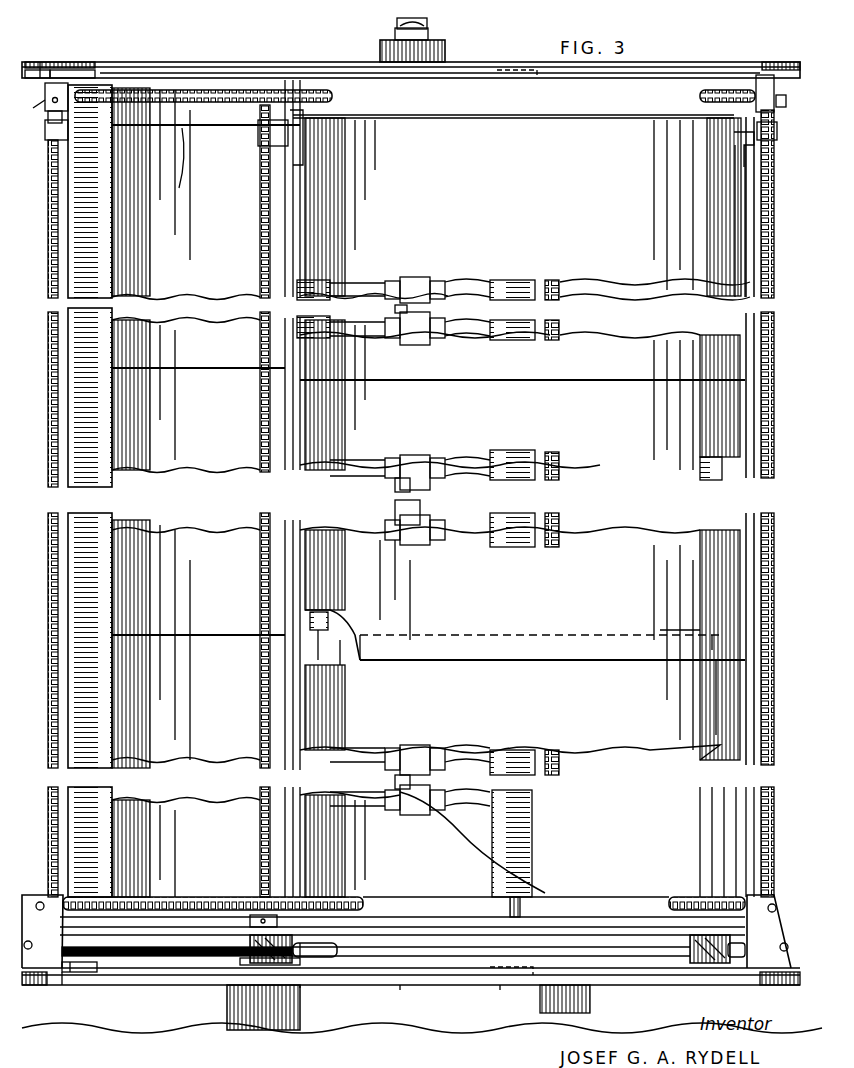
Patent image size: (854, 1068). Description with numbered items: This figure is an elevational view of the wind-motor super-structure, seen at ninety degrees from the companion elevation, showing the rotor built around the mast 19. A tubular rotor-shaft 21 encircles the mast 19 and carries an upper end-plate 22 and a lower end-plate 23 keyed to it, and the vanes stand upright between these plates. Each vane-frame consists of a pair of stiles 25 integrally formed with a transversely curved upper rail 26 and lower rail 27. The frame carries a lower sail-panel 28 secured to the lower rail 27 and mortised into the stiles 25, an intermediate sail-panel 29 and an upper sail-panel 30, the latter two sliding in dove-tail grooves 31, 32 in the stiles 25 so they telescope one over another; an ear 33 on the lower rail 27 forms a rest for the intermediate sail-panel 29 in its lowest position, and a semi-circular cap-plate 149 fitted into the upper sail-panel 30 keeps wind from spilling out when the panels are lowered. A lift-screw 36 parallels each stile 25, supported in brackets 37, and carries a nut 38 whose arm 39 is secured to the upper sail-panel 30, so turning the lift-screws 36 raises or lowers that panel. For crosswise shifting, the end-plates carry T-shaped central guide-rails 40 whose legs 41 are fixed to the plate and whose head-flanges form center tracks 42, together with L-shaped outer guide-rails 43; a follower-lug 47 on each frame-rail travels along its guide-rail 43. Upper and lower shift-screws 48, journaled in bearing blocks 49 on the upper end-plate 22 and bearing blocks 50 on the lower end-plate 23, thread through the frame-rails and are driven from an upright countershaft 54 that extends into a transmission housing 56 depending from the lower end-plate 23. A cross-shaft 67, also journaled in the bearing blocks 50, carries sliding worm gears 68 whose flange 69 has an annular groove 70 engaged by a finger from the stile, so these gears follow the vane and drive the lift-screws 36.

The mast 19 is at (416, 36).
The tubular rotor-shaft 21 is at (422, 462).
The upper end-plate 22 is at (350, 62).
The lower end-plate 23 is at (397, 980).
The stiles 25 is at (332, 282).
The upper rail 26 is at (607, 103).
The lower rail 27 is at (165, 880).
The lower sail-panel 28 is at (558, 668).
The intermediate sail-panel 29 is at (578, 395).
The upper sail-panel 30 is at (642, 270).
The groove 31 is at (310, 700).
The groove 32 is at (295, 730).
The ear 33 is at (522, 907).
The lift-screw 36 is at (48, 258).
The brackets 37 is at (250, 925).
The nut 38 is at (47, 135).
The arm 39 is at (258, 148).
The central guide-rails 40 is at (22, 62).
The legs 41 is at (40, 68).
The center tracks 42 is at (58, 72).
The guide-rails 43 is at (196, 77).
The follower-lug 47 is at (519, 70).
The shift-screws 48 is at (240, 90).
The bearing blocks 49 is at (75, 75).
The bearing blocks 50 is at (32, 922).
The upright countershaft 54 is at (408, 326).
The transmission housing 56 is at (250, 1012).
The cross-shaft 67 is at (169, 947).
The sliding worm gears 68 is at (250, 960).
The flange 69 is at (292, 936).
The annular groove 70 is at (285, 962).
The semi-circular cap-plate 149 is at (180, 150).